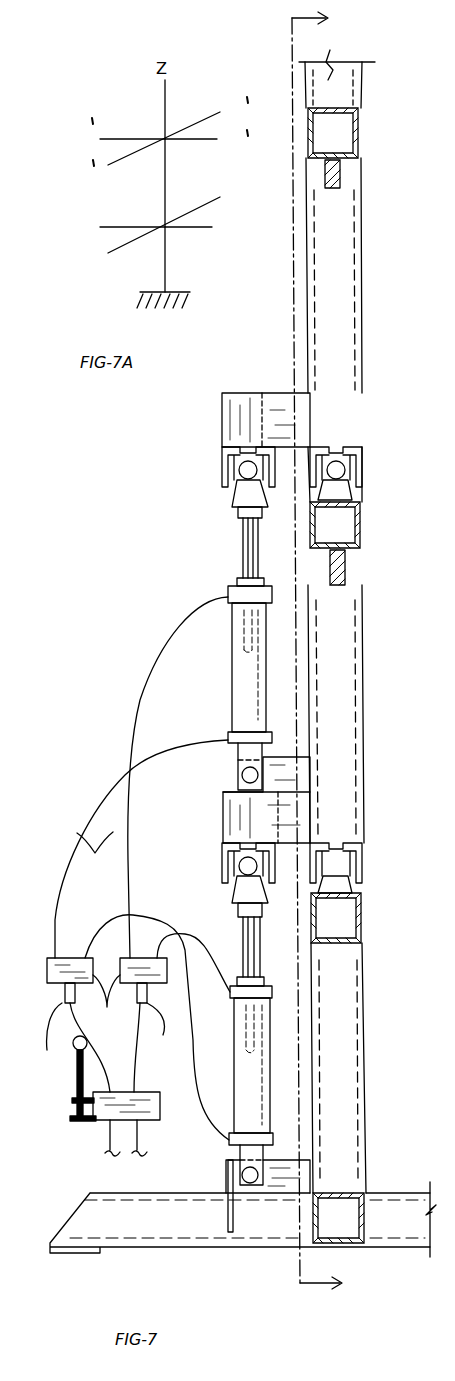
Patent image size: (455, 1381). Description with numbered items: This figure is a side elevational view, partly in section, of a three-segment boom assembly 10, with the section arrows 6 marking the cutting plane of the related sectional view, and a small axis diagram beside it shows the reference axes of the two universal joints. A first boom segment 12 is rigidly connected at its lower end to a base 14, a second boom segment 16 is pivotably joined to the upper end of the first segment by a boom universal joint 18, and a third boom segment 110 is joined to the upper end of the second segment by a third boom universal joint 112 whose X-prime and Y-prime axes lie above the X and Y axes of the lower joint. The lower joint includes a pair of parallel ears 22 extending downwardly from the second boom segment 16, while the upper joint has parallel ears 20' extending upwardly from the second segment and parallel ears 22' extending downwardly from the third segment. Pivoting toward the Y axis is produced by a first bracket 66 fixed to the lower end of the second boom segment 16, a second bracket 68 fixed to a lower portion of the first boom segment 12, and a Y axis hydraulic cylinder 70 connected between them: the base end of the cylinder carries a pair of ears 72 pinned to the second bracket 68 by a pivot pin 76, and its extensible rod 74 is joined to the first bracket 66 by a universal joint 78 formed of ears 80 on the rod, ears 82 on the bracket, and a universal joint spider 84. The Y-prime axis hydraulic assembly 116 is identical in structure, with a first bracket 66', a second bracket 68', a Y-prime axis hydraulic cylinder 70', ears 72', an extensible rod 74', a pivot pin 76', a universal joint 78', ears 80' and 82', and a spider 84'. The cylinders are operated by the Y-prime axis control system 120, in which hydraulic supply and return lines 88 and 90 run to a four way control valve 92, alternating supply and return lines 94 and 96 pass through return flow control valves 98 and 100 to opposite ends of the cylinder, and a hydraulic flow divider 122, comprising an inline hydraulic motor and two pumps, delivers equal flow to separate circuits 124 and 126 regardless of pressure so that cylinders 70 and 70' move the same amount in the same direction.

In FIG. 7, the section line 6- 6 is at (328, 652).
In FIG. 7, the boom assembly 10 is at (393, 268).
In FIG. 7A, the third boom segment 110 is at (167, 88).
In FIG. 7, the third boom segment 110 is at (362, 300).
In FIG. 7A, the third boom universal joint 112 is at (167, 142).
In FIG. 7, the third boom universal joint 112 is at (370, 473).
In FIG. 7A, the second boom segment 16 is at (167, 182).
In FIG. 7, the second boom segment 16 is at (367, 636).
In FIG. 7A, the boom universal joint 18 is at (167, 230).
In FIG. 7, the boom universal joint 18 is at (368, 867).
In FIG. 7A, the first boom segment 12 is at (167, 265).
In FIG. 7, the first boom segment 12 is at (370, 1000).
In FIG. 7, the base 14 is at (387, 1187).
In FIG. 7, the parallel ears 20' is at (373, 489).
In FIG. 7, the parallel ears 22' is at (369, 457).
In FIG. 7, the parallel ears 22 is at (367, 860).
In FIG. 7, the first bracket 66' is at (266, 404).
In FIG. 7, the first bracket 66 is at (229, 800).
In FIG. 7, the second bracket 68' is at (279, 719).
In FIG. 7, the second bracket 68 is at (268, 1139).
In FIG. 7, the Y' axis hydraulic cylinder 70' is at (220, 664).
In FIG. 7, the Y axis hydraulic cylinder 70 is at (235, 1065).
In FIG. 7, the pair of ears 72' is at (215, 766).
In FIG. 7, the pair of ears 72 is at (216, 1161).
In FIG. 7, the extensible rod 74' is at (198, 552).
In FIG. 7, the extensible rod 74 is at (262, 951).
In FIG. 7, the pivot pin 76' is at (203, 785).
In FIG. 7, the pivot pin 76 is at (215, 1196).
In FIG. 7, the universal joint 78' is at (200, 486).
In FIG. 7, the universal joint 78 is at (220, 900).
In FIG. 7, the pair of ears 80' is at (197, 510).
In FIG. 7, the pair of ears 80 is at (205, 897).
In FIG. 7, the pair of ears 82' is at (203, 434).
In FIG. 7, the pair of ears 82 is at (211, 858).
In FIG. 7, the universal joint spider 84' is at (194, 454).
In FIG. 7, the universal joint spider 84 is at (202, 865).
In FIG. 7, the hydraulic supply line 88 is at (102, 1153).
In FIG. 7, the hydraulic return line 90 is at (160, 1118).
In FIG. 7, the four way control valve 92 is at (100, 1123).
In FIG. 7, the alternating hydraulic supply and return line 94 is at (113, 1073).
In FIG. 7, the alternating hydraulic supply and return line 96 is at (137, 1073).
In FIG. 7, the return flow control valve 98 is at (69, 1062).
In FIG. 7, the return flow control valve 100 is at (165, 1026).
In FIG. 7, the Y' axis hydraulic assembly 116 is at (207, 575).
In FIG. 7, the Y' axis control system 120 is at (78, 803).
In FIG. 7, the hydraulic flow divider 122 is at (105, 1003).
In FIG. 7, the separate circuit 124 is at (85, 946).
In FIG. 7, the separate circuit 126 is at (141, 777).